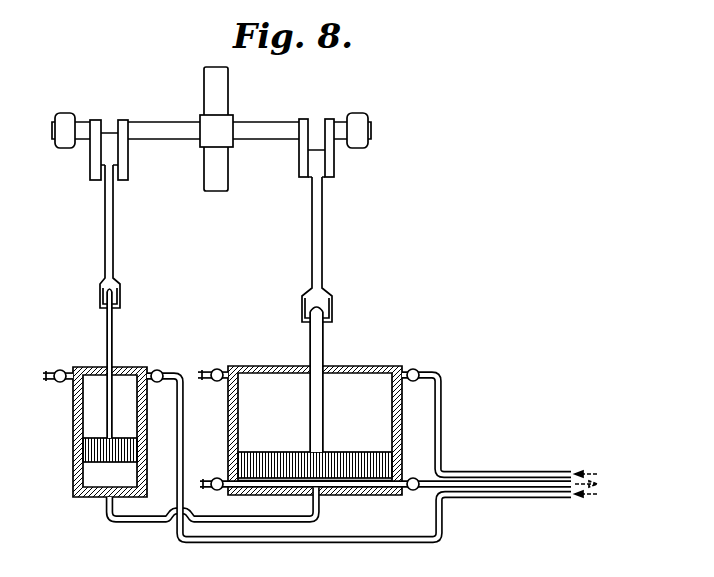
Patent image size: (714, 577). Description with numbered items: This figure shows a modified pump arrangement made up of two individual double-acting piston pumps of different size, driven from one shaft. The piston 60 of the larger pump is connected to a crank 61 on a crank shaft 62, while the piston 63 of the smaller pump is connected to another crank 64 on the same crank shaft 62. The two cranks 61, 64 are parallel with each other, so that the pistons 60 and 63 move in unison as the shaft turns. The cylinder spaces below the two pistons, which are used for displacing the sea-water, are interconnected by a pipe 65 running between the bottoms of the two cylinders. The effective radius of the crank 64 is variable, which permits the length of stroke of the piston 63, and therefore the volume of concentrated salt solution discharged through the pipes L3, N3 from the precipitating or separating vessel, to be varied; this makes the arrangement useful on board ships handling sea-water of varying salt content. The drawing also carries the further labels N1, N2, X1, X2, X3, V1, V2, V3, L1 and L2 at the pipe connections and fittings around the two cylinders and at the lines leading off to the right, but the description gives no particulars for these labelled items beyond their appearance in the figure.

The piston 60 is at (270, 460).
The crank 61 is at (334, 170).
The crank shaft 62 is at (270, 127).
The piston 63 is at (93, 452).
The crank 64 is at (125, 166).
The pipe 65 is at (147, 525).
The valve N1 is at (213, 481).
The valve N2 is at (216, 368).
The pipe N3 is at (57, 371).
The inlet fitting X1 is at (216, 490).
The inlet fitting X2 is at (215, 382).
The inlet fitting X3 is at (57, 382).
The valve V1 is at (413, 478).
The valve V2 is at (414, 369).
The valve V3 is at (158, 370).
The line L1 is at (470, 483).
The line L2 is at (513, 472).
The pipe L3 is at (508, 498).